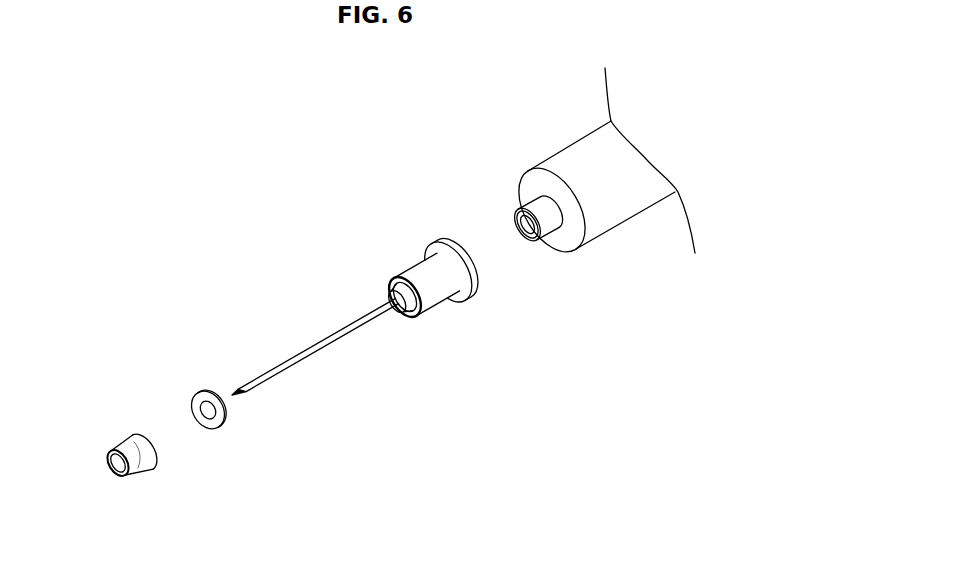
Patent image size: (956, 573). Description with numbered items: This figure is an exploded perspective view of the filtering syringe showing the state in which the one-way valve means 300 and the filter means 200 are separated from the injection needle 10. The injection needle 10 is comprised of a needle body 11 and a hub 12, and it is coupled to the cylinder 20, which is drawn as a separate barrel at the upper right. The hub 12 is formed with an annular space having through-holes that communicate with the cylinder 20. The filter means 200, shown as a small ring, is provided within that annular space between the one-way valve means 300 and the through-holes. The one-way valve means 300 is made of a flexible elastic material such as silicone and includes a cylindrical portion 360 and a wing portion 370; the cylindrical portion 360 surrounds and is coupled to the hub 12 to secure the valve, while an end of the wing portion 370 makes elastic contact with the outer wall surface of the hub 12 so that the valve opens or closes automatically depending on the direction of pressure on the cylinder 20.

The injection needle 10 is at (364, 302).
The needle body 11 is at (337, 338).
The hub 12 is at (430, 287).
The cylinder 20 is at (573, 158).
The filter means 200 is at (192, 390).
The one-way valve means 300 is at (119, 439).
The cylindrical portion 360 is at (133, 472).
The wing portion 370 is at (110, 432).